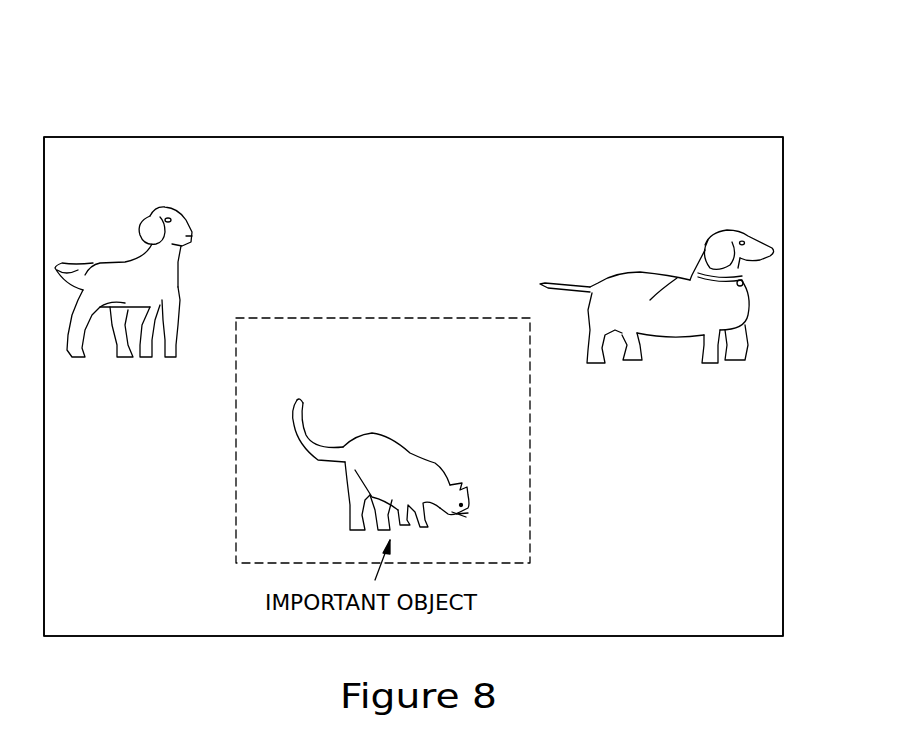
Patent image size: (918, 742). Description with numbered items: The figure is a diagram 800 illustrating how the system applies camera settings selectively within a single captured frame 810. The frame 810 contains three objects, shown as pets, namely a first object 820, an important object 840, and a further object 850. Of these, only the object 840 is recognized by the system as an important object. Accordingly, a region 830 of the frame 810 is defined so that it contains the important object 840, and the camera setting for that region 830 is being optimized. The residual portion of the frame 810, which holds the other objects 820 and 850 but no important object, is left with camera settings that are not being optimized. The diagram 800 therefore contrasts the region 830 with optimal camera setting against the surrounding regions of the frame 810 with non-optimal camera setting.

The diagram 800 is at (81, 55).
The frame 810 is at (108, 136).
The object 820 is at (123, 272).
The region 830 is at (297, 316).
The important object 840 is at (397, 458).
The object 850 is at (653, 293).